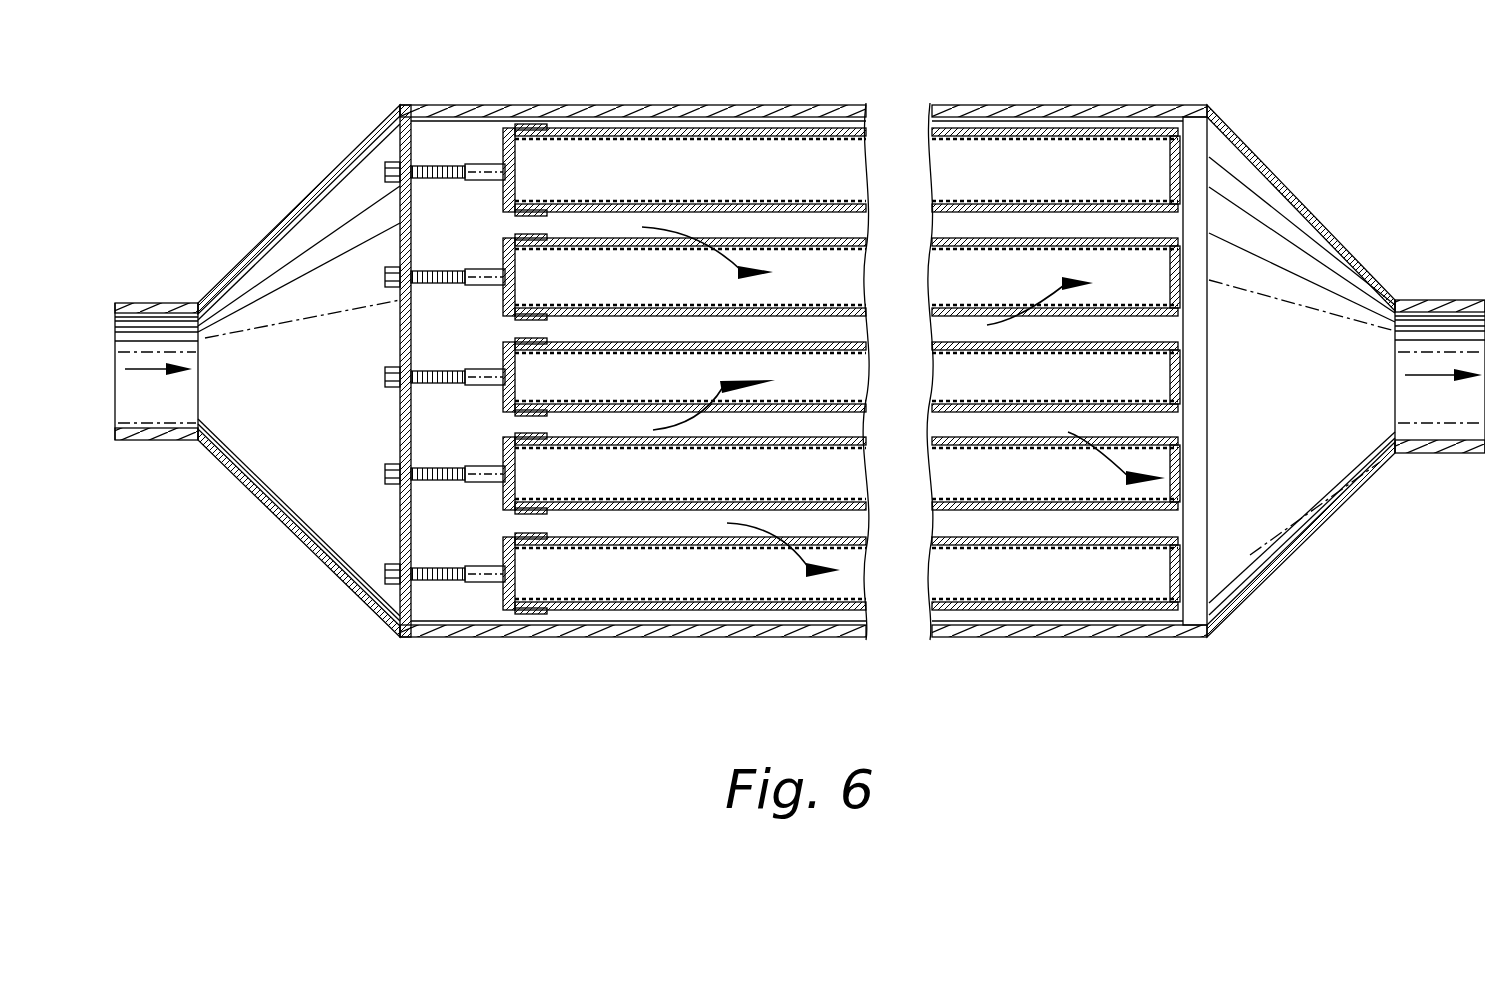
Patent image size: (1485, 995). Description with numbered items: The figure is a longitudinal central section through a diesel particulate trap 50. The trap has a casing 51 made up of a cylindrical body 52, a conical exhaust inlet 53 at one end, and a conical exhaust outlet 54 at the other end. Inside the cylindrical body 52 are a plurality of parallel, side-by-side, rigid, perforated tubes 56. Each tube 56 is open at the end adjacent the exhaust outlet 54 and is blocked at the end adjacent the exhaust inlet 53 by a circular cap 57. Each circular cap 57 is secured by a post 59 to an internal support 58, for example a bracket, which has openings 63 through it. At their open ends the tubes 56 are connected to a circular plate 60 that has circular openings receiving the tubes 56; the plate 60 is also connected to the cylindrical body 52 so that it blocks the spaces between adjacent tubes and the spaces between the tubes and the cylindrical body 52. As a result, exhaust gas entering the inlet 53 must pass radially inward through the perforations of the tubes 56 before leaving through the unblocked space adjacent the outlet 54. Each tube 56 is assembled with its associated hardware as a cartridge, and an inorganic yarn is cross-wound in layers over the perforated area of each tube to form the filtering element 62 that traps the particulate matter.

The diesel particulate trap 50 is at (800, 364).
The casing 51 is at (1158, 648).
The cylindrical body 52 is at (1033, 638).
The conical exhaust inlet 53 is at (215, 462).
The conical exhaust outlet 54 is at (1352, 243).
The perforated tubes 56 is at (553, 143).
The circular cap 57 is at (503, 147).
The internal support 58 is at (400, 294).
The post 59 is at (430, 573).
The circular plate 60 is at (1181, 525).
The filtering element 62 is at (777, 613).
The openings 63 is at (413, 240).